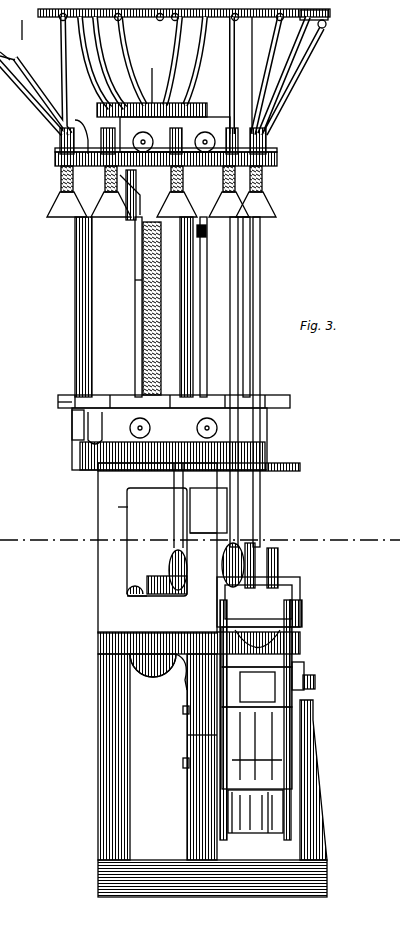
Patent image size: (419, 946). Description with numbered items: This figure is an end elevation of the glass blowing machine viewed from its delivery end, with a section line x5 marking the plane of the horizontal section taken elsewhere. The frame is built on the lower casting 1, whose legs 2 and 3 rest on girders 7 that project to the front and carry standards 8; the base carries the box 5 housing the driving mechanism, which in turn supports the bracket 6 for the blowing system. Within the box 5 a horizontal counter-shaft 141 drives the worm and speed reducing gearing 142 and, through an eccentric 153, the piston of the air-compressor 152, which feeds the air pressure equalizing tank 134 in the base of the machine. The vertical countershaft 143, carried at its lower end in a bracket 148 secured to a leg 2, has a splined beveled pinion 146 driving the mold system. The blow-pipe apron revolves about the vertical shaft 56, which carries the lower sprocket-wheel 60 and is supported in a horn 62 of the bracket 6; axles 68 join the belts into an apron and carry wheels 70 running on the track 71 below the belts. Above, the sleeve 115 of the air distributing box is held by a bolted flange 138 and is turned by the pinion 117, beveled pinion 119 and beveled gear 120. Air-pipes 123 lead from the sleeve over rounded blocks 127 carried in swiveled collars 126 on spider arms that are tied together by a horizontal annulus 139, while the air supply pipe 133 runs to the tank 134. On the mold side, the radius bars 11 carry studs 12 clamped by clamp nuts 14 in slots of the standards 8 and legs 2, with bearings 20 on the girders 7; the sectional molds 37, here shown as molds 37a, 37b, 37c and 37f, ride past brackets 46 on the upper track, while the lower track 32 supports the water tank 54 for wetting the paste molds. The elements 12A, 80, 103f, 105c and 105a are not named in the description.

The collar 126 is at (36, 34).
The horizontal annulus 139 is at (153, 24).
The rounded block 127 is at (11, 66).
The air-pipe 123 is at (60, 98).
The beveled gear 120 is at (138, 196).
The bolted flange 138 is at (157, 85).
The sleeve 115 is at (174, 134).
The pipe 12A is at (255, 75).
The flange plate 80 is at (58, 160).
The horn 62 is at (205, 235).
The pinion 117 is at (136, 205).
The beveled pinion 119 is at (129, 308).
The vertical shaft 56 is at (134, 285).
The axle 68 is at (76, 297).
The bracket 6 is at (134, 308).
The lower sprocket-wheel 60 is at (115, 394).
The bearing 20 is at (36, 410).
The wheel 70 is at (135, 424).
The track 71 is at (76, 450).
The section line x5 is at (200, 541).
The box 5 is at (130, 505).
The chamber 103f is at (157, 542).
The chamber 105c is at (208, 510).
The tube 105a is at (262, 495).
The air-compressor 152 is at (165, 575).
The eccentric 153 is at (135, 585).
The horizontal counter-shaft 141 is at (130, 600).
The worm and speed reducing gearing 142 is at (170, 596).
The air pressure equalizing tank 134 is at (130, 672).
The air supply pipe 133 is at (185, 681).
The beveled pinion 146 is at (182, 710).
The vertical countershaft 143 is at (186, 735).
The bracket 148 is at (182, 763).
The lower casting 1 is at (107, 757).
The leg 2 is at (188, 798).
The leg 3 is at (100, 814).
The girder 7 is at (143, 897).
The sectional mold 37b is at (247, 553).
The sectional mold 37a is at (280, 562).
The sectional mold 37c is at (292, 592).
The bracket 46 is at (300, 614).
The sectional mold 37f is at (284, 661).
The clamp nut 14 is at (305, 680).
The stud 12 is at (315, 688).
The radius bar 11 is at (296, 702).
The standard 8 is at (294, 748).
The sectional mold 37 is at (255, 811).
The lower track 32 is at (233, 820).
The water tank 54 is at (275, 820).